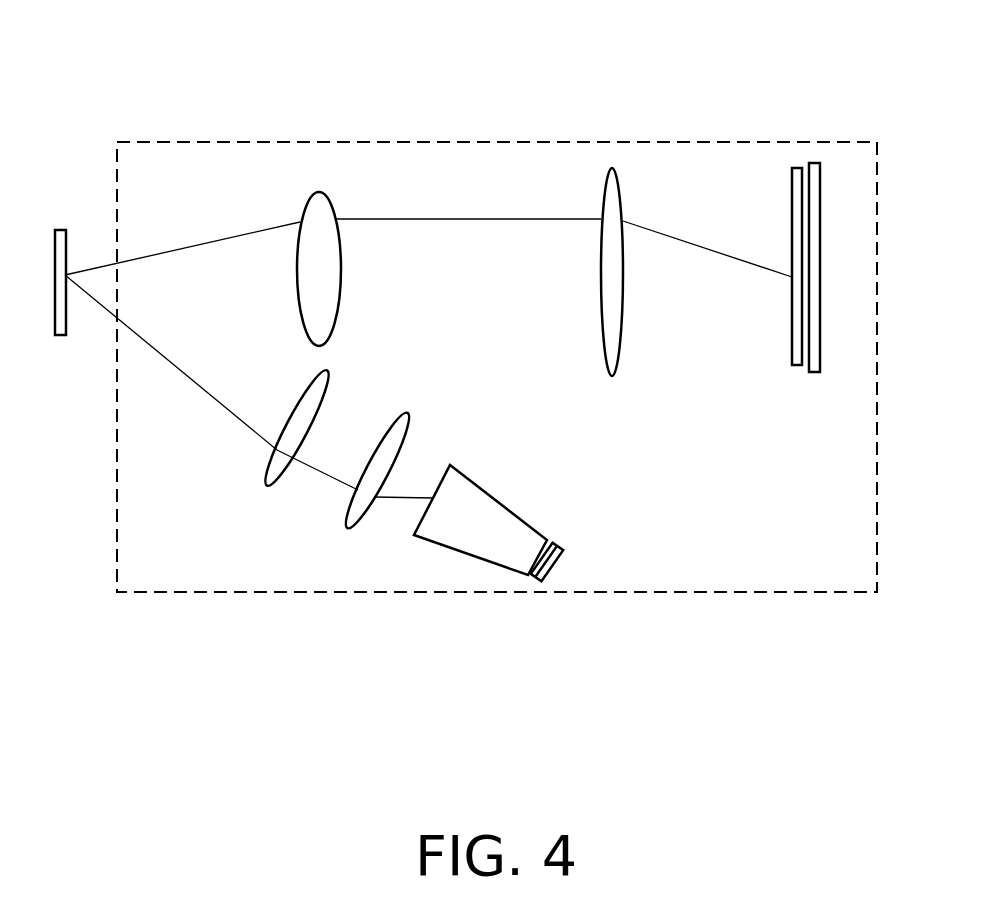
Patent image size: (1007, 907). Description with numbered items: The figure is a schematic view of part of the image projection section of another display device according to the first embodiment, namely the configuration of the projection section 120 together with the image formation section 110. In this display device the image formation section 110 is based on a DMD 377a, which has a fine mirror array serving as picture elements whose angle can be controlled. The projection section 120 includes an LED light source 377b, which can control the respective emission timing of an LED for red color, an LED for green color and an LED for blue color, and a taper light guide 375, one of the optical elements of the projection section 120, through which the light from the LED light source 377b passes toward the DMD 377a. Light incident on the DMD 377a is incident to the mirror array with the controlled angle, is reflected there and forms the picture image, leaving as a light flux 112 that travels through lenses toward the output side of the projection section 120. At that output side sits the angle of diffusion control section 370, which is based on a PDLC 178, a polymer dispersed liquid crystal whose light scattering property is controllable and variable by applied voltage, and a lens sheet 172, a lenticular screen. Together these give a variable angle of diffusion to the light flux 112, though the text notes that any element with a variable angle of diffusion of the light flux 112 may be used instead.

The image formation section 110 is at (62, 179).
The DMD 377a is at (62, 228).
The light flux 112 is at (237, 235).
The projection section 120 is at (734, 592).
The angle of diffusion control section 370 is at (895, 60).
The lens sheet 172 is at (798, 163).
The PDLC 178 is at (817, 163).
The taper light guide 375 is at (460, 552).
The LED light source 377b is at (538, 578).